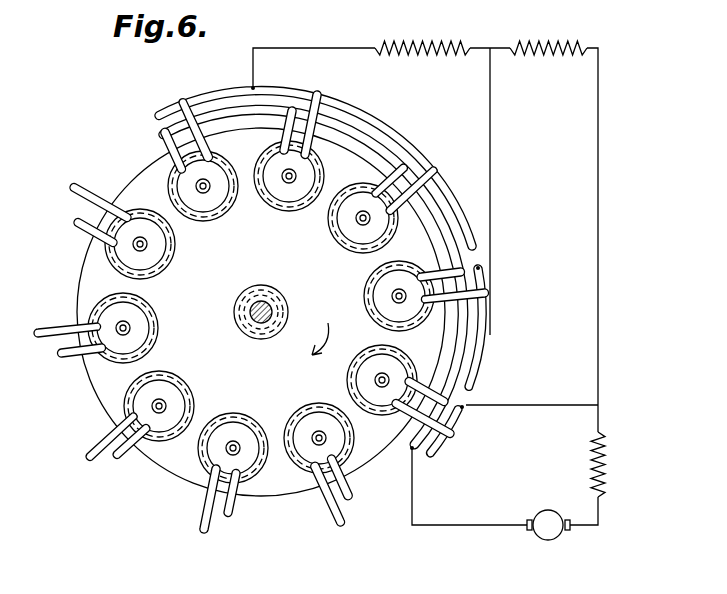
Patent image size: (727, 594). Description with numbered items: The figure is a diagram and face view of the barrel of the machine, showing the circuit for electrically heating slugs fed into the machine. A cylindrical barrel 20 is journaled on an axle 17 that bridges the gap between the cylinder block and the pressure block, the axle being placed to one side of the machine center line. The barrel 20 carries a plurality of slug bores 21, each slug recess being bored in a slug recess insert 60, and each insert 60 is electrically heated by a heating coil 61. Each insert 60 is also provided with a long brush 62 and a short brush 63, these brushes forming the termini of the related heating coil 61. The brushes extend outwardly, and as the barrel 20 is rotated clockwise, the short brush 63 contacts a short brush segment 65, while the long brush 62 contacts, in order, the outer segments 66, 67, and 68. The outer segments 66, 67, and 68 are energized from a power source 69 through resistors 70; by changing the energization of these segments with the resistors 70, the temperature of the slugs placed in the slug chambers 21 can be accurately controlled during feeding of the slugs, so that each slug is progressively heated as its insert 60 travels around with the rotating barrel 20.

The axle 17 is at (261, 297).
The cylindrical barrel 20 is at (214, 355).
The slug bores 21 is at (123, 248).
The slug recess insert 60 is at (132, 398).
The heating coils 61 is at (372, 282).
The long brush 62 is at (48, 328).
The short brush 63 is at (73, 350).
The short brush segment 65 is at (367, 137).
The outer segment 66 is at (413, 148).
The outer segment 67 is at (489, 335).
The outer segment 68 is at (456, 432).
The power source 69 is at (540, 535).
The resistors 70 is at (428, 46).